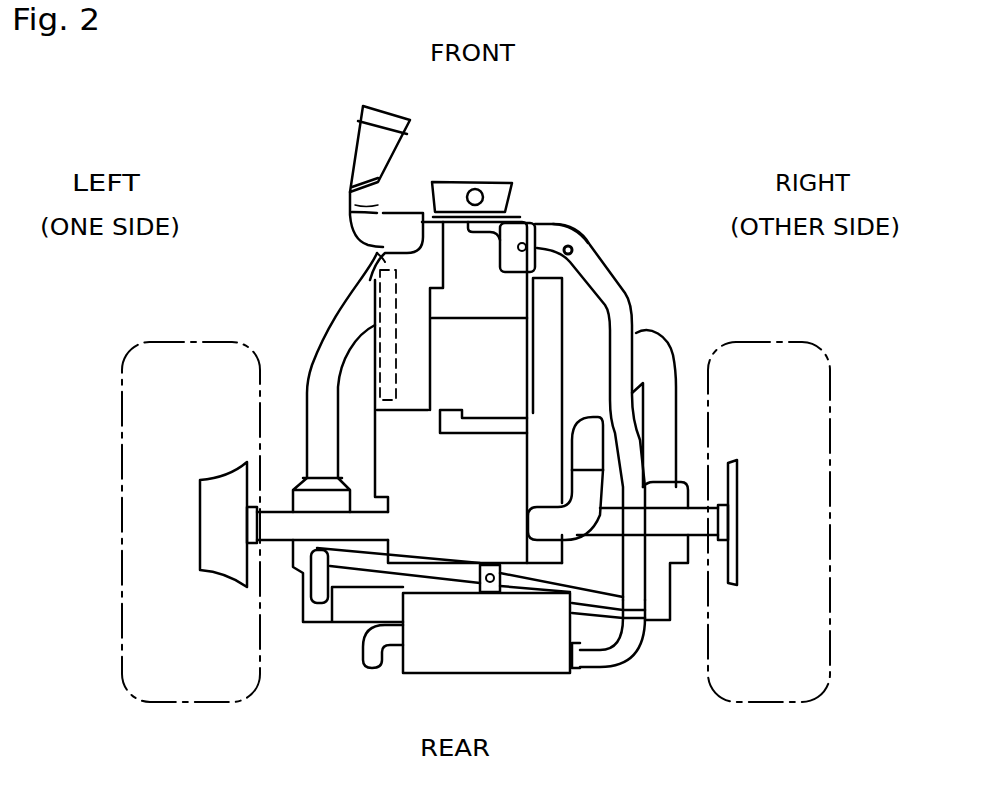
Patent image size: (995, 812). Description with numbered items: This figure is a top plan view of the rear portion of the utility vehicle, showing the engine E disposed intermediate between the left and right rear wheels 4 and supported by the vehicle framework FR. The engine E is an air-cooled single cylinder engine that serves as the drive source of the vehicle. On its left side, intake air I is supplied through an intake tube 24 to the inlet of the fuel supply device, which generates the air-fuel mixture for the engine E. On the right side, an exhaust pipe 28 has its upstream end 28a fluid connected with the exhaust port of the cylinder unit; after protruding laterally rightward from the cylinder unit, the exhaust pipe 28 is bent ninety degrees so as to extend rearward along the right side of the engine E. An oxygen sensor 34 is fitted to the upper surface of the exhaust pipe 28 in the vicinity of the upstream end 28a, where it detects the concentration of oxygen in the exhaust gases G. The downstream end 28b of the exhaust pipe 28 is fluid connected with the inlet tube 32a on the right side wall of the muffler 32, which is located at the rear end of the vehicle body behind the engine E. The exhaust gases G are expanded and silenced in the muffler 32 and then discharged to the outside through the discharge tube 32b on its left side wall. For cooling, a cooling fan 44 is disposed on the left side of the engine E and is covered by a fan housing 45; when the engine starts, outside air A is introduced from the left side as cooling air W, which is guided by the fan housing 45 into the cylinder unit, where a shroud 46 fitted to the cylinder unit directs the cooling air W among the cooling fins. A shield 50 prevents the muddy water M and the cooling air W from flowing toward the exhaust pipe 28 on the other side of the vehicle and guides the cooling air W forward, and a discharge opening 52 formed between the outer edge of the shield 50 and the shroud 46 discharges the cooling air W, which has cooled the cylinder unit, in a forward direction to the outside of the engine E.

The rear wheel 4 is at (123, 682).
The intake tube 24 is at (350, 160).
The exhaust pipe 28 is at (617, 310).
The upstream end 28a is at (553, 223).
The downstream end 28b is at (635, 600).
The muffler 32 is at (527, 660).
The inlet tube 32a is at (607, 657).
The discharge tube 32b is at (363, 652).
The oxygen sensor 34 is at (569, 249).
The cooling fan 44 is at (357, 287).
The fan housing 45 is at (377, 260).
The shroud 46 is at (460, 245).
The shield 50 is at (525, 233).
The discharge opening 52 is at (487, 225).
The engine E is at (447, 378).
The muddy water M is at (313, 332).
The outside air A is at (330, 315).
The cooling air W is at (403, 300).
The intake air I is at (397, 70).
The exhaust gases G is at (372, 673).
The vehicle framework FR is at (673, 347).